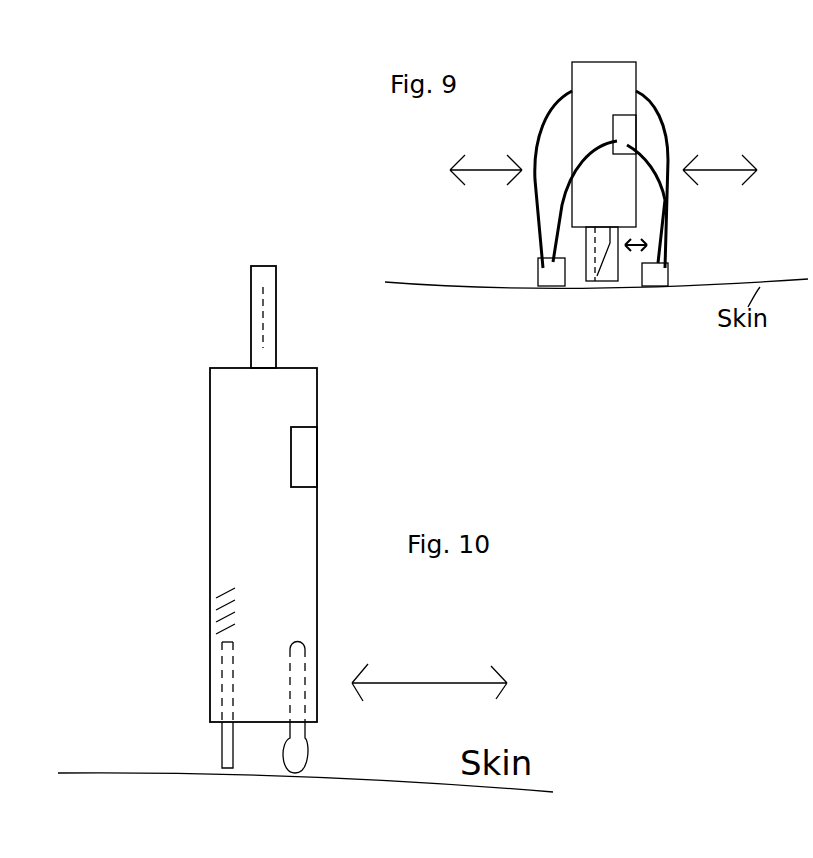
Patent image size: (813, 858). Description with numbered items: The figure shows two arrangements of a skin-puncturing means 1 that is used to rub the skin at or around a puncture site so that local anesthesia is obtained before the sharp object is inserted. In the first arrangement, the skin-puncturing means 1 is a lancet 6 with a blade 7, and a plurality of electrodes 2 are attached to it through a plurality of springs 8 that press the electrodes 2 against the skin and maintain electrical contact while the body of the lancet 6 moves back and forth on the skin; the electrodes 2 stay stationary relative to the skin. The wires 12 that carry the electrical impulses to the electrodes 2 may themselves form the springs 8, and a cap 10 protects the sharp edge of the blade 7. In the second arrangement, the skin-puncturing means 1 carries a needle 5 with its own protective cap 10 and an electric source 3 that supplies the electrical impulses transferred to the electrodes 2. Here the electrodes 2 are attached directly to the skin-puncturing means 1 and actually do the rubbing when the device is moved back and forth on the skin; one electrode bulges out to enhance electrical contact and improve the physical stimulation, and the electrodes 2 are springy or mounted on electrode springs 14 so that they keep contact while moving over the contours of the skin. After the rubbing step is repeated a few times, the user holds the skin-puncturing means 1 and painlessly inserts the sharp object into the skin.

In FIG. 10, the skin-puncturing means 1 is at (225, 435).
In FIG. 9, the electrodes 2 is at (550, 283).
In FIG. 10, the electrodes 2 is at (225, 738).
In FIG. 10, the electric source 3 is at (307, 462).
In FIG. 10, the needle 5 is at (262, 325).
In FIG. 9, the lancet 6 is at (592, 88).
In FIG. 9, the blade 7 is at (602, 252).
In FIG. 9, the springs 8 is at (667, 147).
In FIG. 9, the cap 10 is at (558, 222).
In FIG. 10, the cap 10 is at (252, 315).
In FIG. 9, the wires 12 is at (572, 262).
In FIG. 10, the electrode springs 14 is at (223, 610).